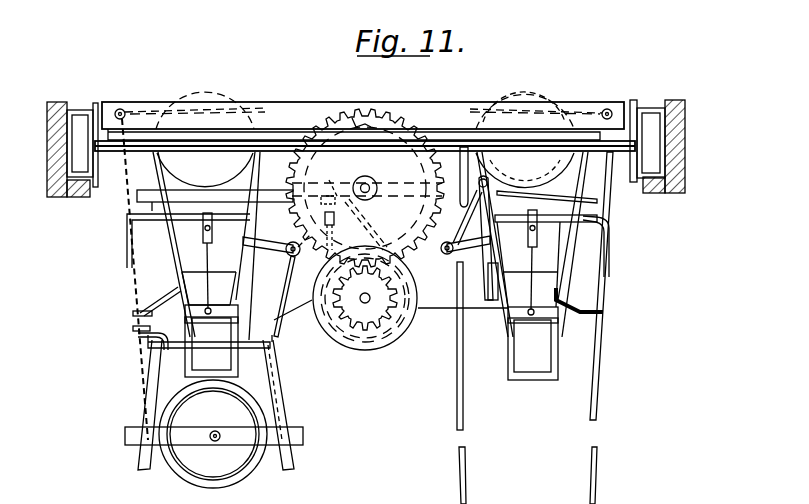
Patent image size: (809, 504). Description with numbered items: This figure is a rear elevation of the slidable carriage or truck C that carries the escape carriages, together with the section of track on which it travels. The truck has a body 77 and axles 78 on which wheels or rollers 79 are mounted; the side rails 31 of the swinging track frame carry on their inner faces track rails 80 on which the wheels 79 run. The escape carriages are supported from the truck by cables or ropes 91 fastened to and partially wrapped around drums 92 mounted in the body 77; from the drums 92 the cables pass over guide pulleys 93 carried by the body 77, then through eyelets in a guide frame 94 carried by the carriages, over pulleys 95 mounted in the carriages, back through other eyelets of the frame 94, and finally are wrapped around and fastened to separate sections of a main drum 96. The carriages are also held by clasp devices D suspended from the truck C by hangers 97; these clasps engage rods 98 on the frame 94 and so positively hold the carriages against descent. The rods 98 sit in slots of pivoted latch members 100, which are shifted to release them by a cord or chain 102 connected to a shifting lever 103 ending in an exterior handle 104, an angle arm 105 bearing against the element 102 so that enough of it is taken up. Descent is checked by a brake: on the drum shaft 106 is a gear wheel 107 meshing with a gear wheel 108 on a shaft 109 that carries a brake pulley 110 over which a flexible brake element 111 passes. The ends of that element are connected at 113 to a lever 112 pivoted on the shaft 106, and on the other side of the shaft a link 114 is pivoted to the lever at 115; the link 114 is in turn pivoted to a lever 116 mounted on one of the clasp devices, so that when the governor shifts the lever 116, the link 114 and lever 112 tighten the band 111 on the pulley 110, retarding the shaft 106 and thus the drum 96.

The slidable carriage or truck C is at (150, 102).
The clasp devices D is at (205, 343).
The side rails 31 is at (50, 172).
The body 77 is at (239, 103).
The axles 78 is at (604, 152).
The wheels or rollers 79 is at (80, 118).
The track rails 80 is at (74, 198).
The cables or ropes 91 is at (615, 390).
The drums 92 is at (365, 140).
The guide pulleys 93 is at (121, 108).
The guide frame 94 is at (140, 408).
The pulleys 95 is at (240, 427).
The main drum 96 is at (362, 110).
The hangers 97 is at (170, 243).
The rods 98 is at (140, 331).
The latch members 100 is at (228, 346).
The cord or chain 102 is at (212, 262).
The shifting lever or member 103 is at (203, 231).
The handle 104 is at (127, 235).
The angle arm 105 is at (214, 236).
The drum shaft 106 is at (369, 184).
The gear wheel 107 is at (394, 136).
The gear wheel 108 is at (369, 322).
The shaft 109 is at (359, 313).
The brake pulley 110 is at (394, 337).
The flexible brake element 111 is at (320, 336).
The lever 112 is at (260, 190).
The connections 113 is at (335, 200).
The link 114 is at (488, 264).
The pivot 115 is at (478, 198).
The lever 116 is at (492, 310).